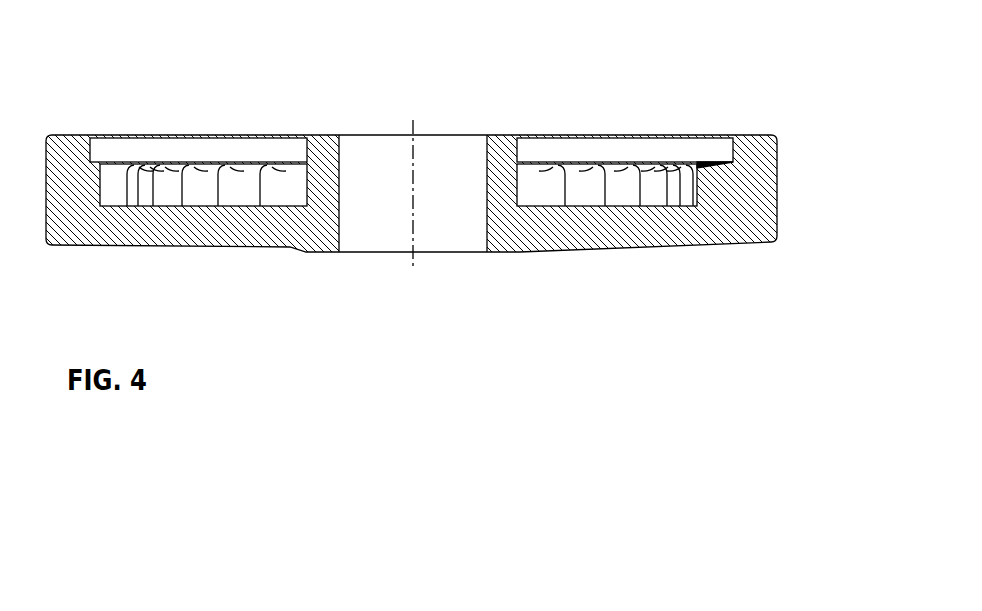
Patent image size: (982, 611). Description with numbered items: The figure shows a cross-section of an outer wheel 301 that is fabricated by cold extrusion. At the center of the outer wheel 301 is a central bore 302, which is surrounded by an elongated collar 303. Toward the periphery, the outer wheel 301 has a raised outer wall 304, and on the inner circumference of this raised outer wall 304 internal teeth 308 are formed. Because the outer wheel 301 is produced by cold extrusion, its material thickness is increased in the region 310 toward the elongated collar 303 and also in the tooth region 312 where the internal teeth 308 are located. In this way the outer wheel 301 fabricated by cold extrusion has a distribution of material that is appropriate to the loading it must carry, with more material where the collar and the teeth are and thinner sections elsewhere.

The outer wheel 301 is at (503, 133).
The central bore 302 is at (428, 243).
The elongated collar 303 is at (293, 137).
The raised outer wall 304 is at (780, 183).
The internal teeth 308 is at (200, 178).
The region toward the elongated collar 310 is at (293, 250).
The tooth region 312 is at (743, 188).